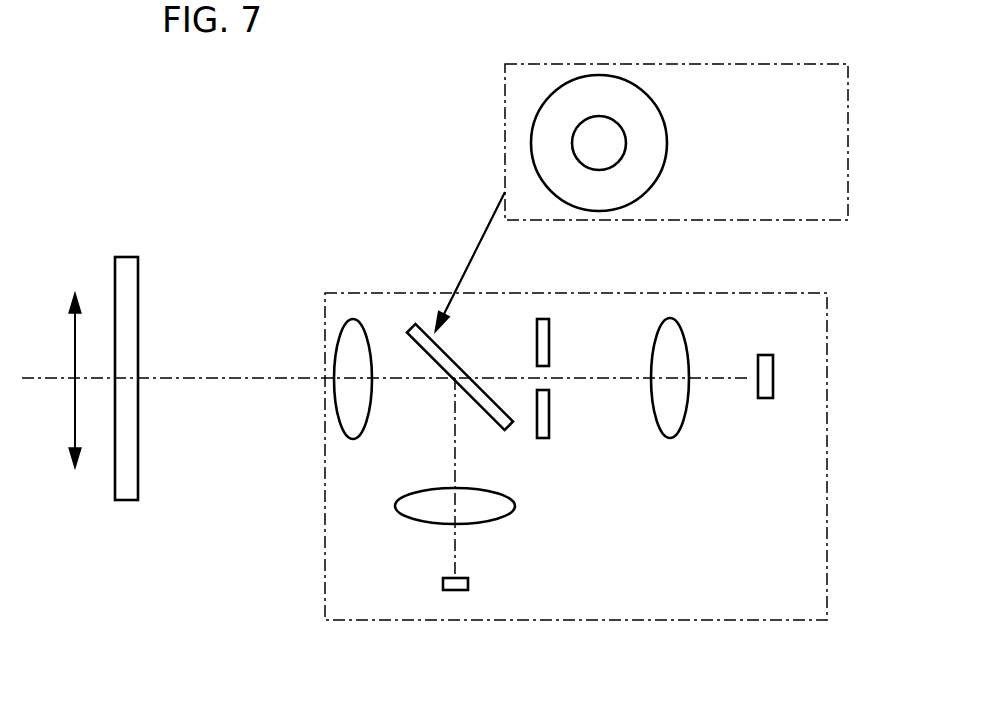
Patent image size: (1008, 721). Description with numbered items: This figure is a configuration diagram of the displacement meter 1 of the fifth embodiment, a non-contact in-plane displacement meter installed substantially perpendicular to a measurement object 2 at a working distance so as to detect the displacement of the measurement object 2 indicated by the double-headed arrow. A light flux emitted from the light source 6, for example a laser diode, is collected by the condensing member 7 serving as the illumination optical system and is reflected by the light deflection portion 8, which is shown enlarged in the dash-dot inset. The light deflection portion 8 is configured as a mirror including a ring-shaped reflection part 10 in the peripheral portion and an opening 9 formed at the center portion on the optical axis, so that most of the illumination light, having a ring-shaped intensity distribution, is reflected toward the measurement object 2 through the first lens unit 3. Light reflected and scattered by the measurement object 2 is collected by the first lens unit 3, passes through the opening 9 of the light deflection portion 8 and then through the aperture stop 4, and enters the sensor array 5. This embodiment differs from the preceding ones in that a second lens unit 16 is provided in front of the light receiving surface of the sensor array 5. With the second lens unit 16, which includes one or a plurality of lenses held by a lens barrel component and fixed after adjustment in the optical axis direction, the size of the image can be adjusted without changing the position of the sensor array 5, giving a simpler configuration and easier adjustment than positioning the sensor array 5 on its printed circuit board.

The displacement meter 1 is at (827, 442).
The measurement object 2 is at (115, 282).
The first lens unit 3 is at (358, 321).
The aperture stop 4 is at (550, 330).
The sensor array 5 is at (767, 355).
The light source 6 is at (468, 584).
The condensing member 7 is at (513, 508).
The light deflection portion 8 is at (627, 247).
The opening 9 is at (608, 140).
The reflection part 10 is at (643, 157).
The second lens unit 16 is at (680, 330).